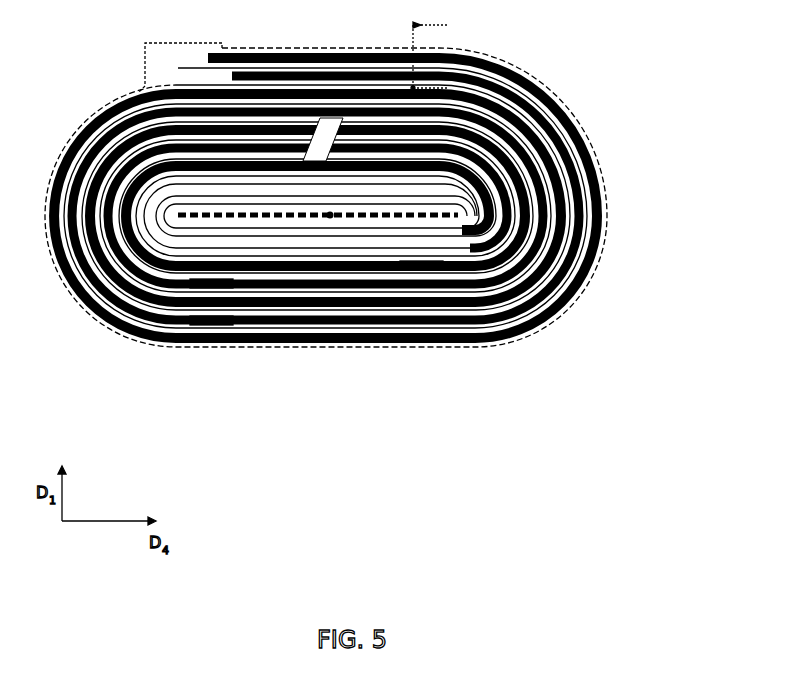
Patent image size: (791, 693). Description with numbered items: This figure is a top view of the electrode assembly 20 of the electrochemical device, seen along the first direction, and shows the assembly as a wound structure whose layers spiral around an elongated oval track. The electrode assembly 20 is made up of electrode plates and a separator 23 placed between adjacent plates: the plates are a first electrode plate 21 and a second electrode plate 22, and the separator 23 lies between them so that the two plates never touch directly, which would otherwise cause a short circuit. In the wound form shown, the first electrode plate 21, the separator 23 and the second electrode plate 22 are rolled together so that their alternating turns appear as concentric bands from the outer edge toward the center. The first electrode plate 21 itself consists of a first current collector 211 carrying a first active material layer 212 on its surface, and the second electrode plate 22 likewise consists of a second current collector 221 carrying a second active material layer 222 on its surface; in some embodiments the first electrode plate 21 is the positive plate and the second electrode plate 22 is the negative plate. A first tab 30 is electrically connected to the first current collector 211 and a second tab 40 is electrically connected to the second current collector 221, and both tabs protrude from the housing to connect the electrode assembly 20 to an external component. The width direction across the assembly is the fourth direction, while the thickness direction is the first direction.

The electrode assembly 20 is at (297, 56).
The first electrode plate 21 is at (371, 198).
The first current collector 211 is at (580, 156).
The first active material layer 212 is at (563, 153).
The second electrode plate 22 is at (362, 185).
The second current collector 221 is at (560, 95).
The second active material layer 222 is at (542, 73).
The separator 23 is at (598, 176).
The first tab 30 is at (200, 286).
The second tab 40 is at (416, 343).